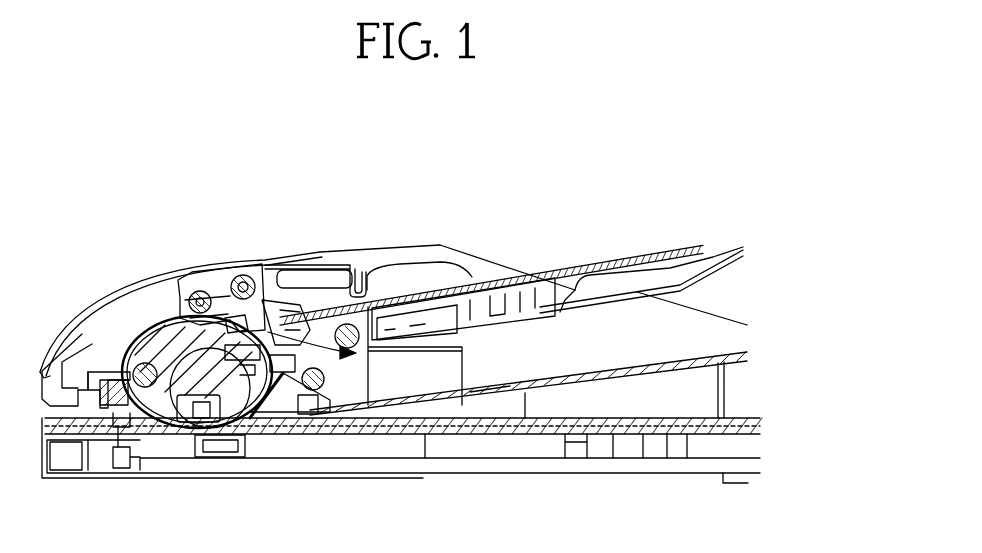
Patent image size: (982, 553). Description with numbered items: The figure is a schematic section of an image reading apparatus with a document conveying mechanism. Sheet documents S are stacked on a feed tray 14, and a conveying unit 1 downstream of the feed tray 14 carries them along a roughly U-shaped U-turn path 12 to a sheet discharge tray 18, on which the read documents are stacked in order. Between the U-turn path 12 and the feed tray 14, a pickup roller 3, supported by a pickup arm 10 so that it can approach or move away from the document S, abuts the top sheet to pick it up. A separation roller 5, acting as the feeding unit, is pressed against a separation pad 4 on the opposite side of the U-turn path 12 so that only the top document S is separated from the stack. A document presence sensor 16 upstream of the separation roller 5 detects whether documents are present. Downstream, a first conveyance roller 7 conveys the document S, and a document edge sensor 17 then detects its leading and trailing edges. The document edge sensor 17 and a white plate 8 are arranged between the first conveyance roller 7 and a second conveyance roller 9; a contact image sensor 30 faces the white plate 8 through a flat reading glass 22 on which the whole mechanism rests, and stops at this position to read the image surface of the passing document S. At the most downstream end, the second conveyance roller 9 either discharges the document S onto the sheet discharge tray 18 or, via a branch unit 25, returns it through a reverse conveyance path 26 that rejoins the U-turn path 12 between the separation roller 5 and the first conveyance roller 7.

The conveying unit 1 is at (105, 280).
The U-turn path 12 is at (102, 318).
The first conveyance roller 7 is at (97, 370).
The separation roller 5 is at (178, 278).
The pickup arm 10 is at (210, 288).
The document presence sensor 16 is at (233, 320).
The pickup roller 3 is at (243, 275).
The branch unit 25 is at (278, 368).
The feed tray 14 is at (440, 312).
The document S is at (610, 256).
The document edge sensor 17 is at (130, 405).
The reverse conveyance path 26 is at (165, 405).
The white plate 8 is at (177, 433).
The contact image sensor 30 is at (222, 447).
The separation pad 4 is at (243, 370).
The second conveyance roller 9 is at (322, 400).
The reading glass 22 is at (457, 437).
The sheet discharge tray 18 is at (493, 373).